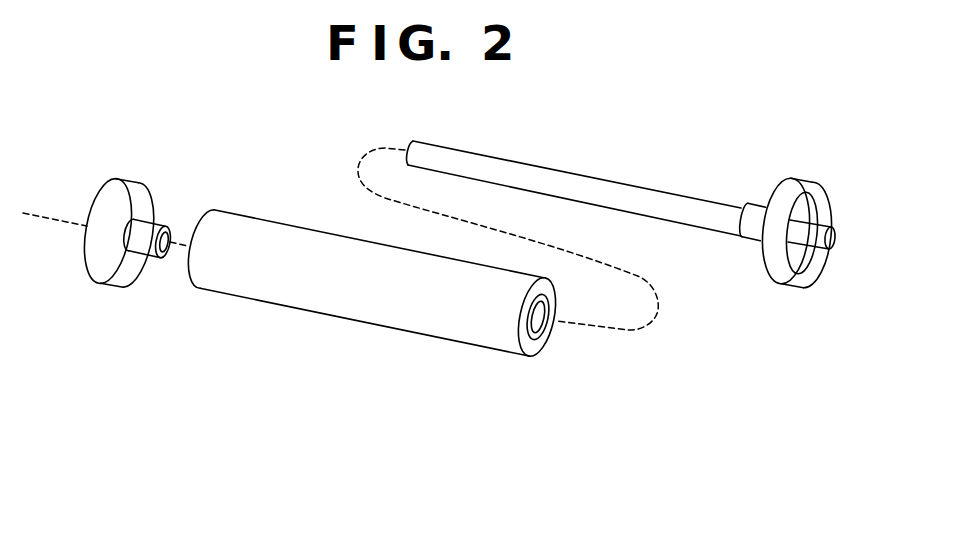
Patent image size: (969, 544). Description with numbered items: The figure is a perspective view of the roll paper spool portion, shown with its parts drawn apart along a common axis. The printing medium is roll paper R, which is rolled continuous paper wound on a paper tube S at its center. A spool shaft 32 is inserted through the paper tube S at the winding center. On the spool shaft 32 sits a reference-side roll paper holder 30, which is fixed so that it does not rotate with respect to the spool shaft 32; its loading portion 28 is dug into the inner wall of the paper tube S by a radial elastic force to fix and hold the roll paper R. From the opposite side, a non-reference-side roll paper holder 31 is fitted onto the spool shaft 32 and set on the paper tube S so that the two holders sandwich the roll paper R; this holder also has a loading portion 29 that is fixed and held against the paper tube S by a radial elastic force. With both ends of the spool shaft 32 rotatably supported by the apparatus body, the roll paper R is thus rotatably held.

The loading portion 28 is at (757, 210).
The loading portion 29 is at (156, 222).
The reference-side roll paper holder 30 is at (778, 275).
The non-reference-side roll paper holder 31 is at (120, 183).
The spool shaft 32 is at (545, 176).
The roll paper R is at (340, 302).
The paper tube S is at (547, 330).